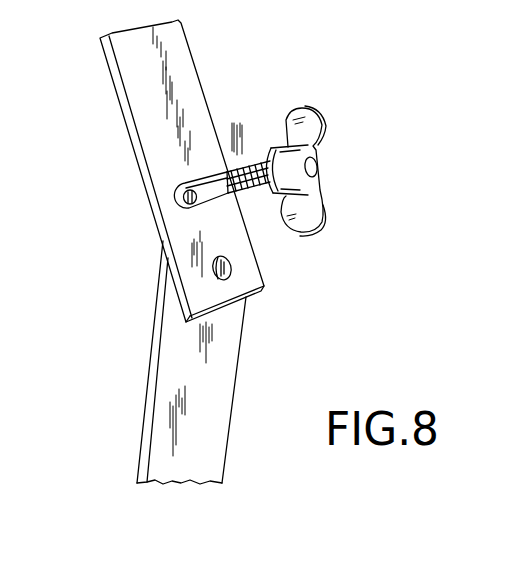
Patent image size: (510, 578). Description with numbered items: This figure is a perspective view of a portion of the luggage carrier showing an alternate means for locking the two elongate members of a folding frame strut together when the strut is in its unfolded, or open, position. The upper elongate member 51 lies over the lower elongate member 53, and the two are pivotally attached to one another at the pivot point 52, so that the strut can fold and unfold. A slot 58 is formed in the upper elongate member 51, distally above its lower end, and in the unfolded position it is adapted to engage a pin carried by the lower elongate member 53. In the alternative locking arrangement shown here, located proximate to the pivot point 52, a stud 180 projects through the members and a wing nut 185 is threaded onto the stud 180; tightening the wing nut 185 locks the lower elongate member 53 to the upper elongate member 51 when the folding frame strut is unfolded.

The upper elongate member 51 is at (132, 80).
The pivot point 52 is at (231, 270).
The lower elongate member 53 is at (167, 383).
The slot 58 is at (178, 208).
The stud 180 is at (236, 160).
The wing nut 185 is at (322, 126).